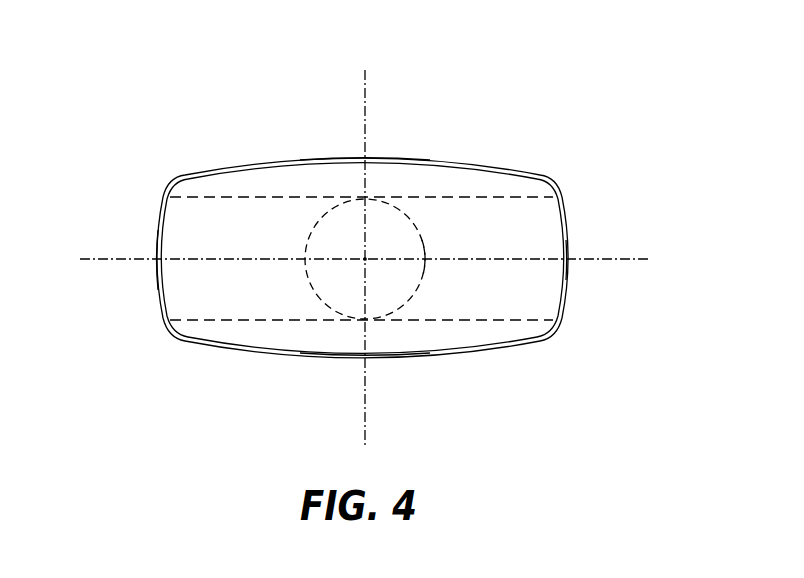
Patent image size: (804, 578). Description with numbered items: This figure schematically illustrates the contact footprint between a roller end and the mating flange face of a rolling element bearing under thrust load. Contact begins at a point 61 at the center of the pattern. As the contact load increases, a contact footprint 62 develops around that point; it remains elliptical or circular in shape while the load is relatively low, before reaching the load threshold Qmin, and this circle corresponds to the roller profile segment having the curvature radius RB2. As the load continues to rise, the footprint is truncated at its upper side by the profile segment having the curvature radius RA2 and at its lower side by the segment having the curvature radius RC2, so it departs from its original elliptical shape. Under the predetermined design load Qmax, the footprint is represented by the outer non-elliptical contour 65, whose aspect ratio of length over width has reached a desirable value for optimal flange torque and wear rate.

The contact start point 61 is at (363, 257).
The contact footprint 62 is at (329, 306).
The contact footprint at design load 65 is at (228, 166).
The curvature radius of segment AB RA2 is at (391, 156).
The curvature radius of segment BC RB2 is at (301, 248).
The curvature radius of segment CD RC2 is at (295, 365).
The predetermined design load Qmax is at (573, 233).
The load threshold Qmin is at (434, 277).